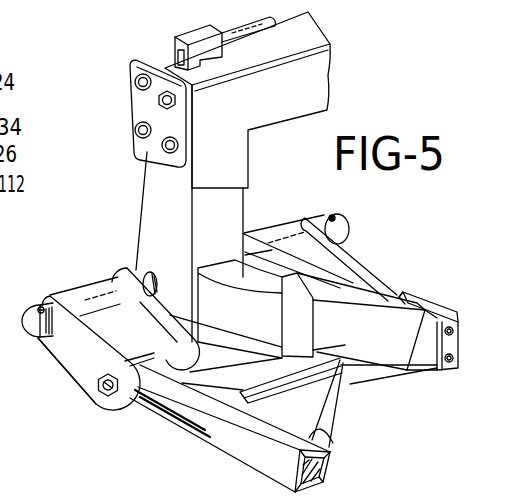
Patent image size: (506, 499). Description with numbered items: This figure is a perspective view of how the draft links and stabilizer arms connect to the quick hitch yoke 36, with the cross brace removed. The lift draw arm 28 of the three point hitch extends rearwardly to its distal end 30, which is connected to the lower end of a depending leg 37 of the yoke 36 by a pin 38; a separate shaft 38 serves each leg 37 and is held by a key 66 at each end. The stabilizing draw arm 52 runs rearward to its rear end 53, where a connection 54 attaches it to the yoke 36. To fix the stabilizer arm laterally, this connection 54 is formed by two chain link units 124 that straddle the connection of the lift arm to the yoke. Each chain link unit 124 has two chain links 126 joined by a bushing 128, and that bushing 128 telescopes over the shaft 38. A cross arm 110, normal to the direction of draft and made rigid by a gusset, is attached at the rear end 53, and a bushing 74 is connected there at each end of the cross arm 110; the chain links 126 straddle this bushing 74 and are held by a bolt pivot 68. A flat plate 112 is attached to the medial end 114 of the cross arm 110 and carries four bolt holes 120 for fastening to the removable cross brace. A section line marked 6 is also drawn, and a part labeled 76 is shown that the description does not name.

The section line 6- 6 is at (40, 238).
The lift draw arm 28 is at (380, 354).
The distal end 30 is at (260, 331).
The quick hitch yoke 36 is at (285, 114).
The leg 37 is at (167, 243).
The pin 38 is at (36, 339).
The stabilizing draw arm 52 is at (322, 429).
The rear end 53 is at (243, 447).
The connection 54 is at (365, 238).
The key 66 is at (55, 343).
The bolt pivot 68 is at (128, 426).
The bushing 74 is at (137, 334).
The bolt 76 is at (97, 394).
The cross arm 110 is at (395, 378).
The flat plate 112 is at (407, 296).
The medial end 114 is at (441, 370).
The bolt hole 120 is at (421, 299).
The chain link unit 124 is at (96, 276).
The chain link 126 is at (68, 344).
The bushing 128 is at (80, 289).